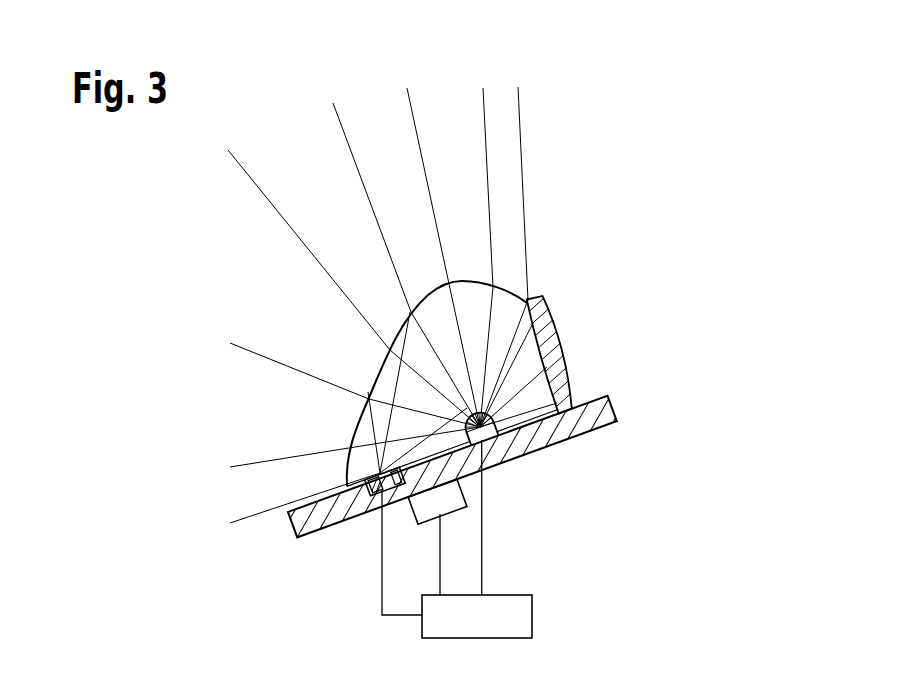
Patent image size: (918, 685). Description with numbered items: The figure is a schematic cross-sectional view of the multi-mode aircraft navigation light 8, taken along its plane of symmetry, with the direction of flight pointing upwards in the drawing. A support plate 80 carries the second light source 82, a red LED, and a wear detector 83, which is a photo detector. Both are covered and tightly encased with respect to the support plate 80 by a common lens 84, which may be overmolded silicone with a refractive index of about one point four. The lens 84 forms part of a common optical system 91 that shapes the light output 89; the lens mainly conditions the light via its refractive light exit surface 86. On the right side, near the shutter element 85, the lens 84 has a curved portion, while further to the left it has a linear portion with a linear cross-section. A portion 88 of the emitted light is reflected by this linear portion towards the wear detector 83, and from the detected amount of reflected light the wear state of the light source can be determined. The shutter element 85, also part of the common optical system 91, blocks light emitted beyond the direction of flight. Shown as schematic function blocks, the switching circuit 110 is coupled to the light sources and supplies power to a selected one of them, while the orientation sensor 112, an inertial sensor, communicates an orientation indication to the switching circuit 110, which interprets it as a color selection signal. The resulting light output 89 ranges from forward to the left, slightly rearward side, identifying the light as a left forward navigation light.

The multi-mode aircraft navigation light 8 is at (229, 230).
The support plate 80 is at (597, 412).
The second light source 82 is at (497, 437).
The wear detector 83 is at (364, 502).
The lens 84 is at (516, 265).
The shutter element 85 is at (538, 298).
The refractive light exit surface 86 is at (424, 271).
The portion of the light 88 is at (366, 420).
The light output 89 is at (553, 127).
The common optical system 91 is at (635, 233).
The switching circuit 110 is at (510, 618).
The orientation sensor 112 is at (456, 504).